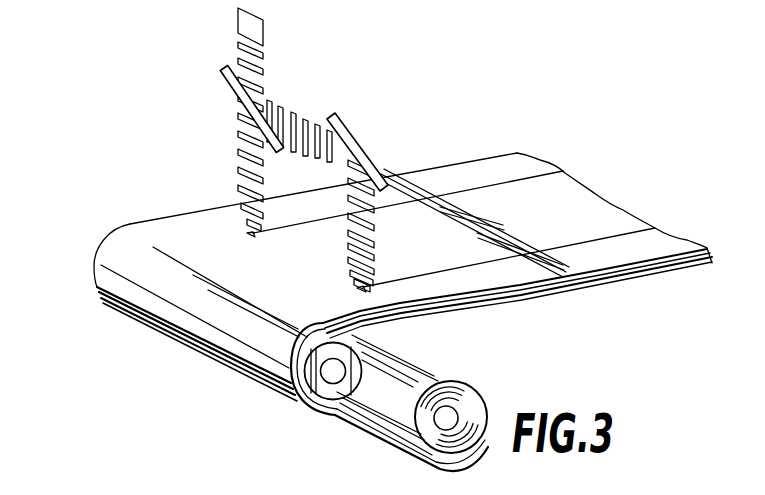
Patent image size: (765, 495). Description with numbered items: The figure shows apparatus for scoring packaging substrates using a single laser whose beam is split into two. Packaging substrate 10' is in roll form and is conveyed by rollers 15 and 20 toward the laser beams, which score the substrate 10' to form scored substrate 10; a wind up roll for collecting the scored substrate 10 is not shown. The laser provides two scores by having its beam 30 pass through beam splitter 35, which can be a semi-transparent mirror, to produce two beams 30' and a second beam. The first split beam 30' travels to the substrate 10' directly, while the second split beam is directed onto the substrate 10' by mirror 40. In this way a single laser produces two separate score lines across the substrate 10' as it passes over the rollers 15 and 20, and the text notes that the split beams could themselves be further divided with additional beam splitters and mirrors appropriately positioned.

The scored substrate 10 is at (418, 190).
The packaging substrate 10' is at (370, 347).
The roller 15 is at (358, 370).
The roller 20 is at (447, 418).
The beam 30 is at (285, 95).
The beam 30' is at (363, 188).
The beam splitter 35 is at (232, 72).
The mirror 40 is at (357, 143).